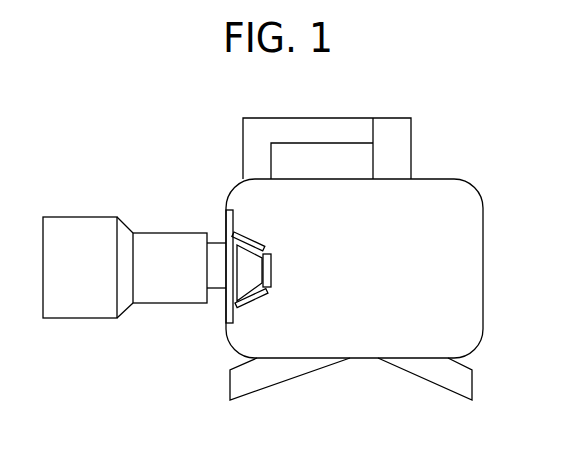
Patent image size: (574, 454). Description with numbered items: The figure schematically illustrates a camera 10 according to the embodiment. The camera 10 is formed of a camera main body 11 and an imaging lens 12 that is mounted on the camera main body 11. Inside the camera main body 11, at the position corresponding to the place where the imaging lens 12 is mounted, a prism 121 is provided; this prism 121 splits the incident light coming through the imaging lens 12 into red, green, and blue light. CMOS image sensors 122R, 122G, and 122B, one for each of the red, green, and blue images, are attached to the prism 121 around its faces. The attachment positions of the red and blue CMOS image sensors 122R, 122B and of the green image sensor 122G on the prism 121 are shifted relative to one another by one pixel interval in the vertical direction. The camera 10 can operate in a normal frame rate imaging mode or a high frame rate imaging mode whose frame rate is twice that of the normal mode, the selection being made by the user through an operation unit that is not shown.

The camera 10 is at (177, 98).
The camera main body 11 is at (353, 360).
The imaging lens 12 is at (88, 314).
The prism 121 is at (242, 268).
The CMOS image sensor 122R is at (255, 238).
The CMOS image sensor 122G is at (272, 264).
The CMOS image sensor 122B is at (262, 303).